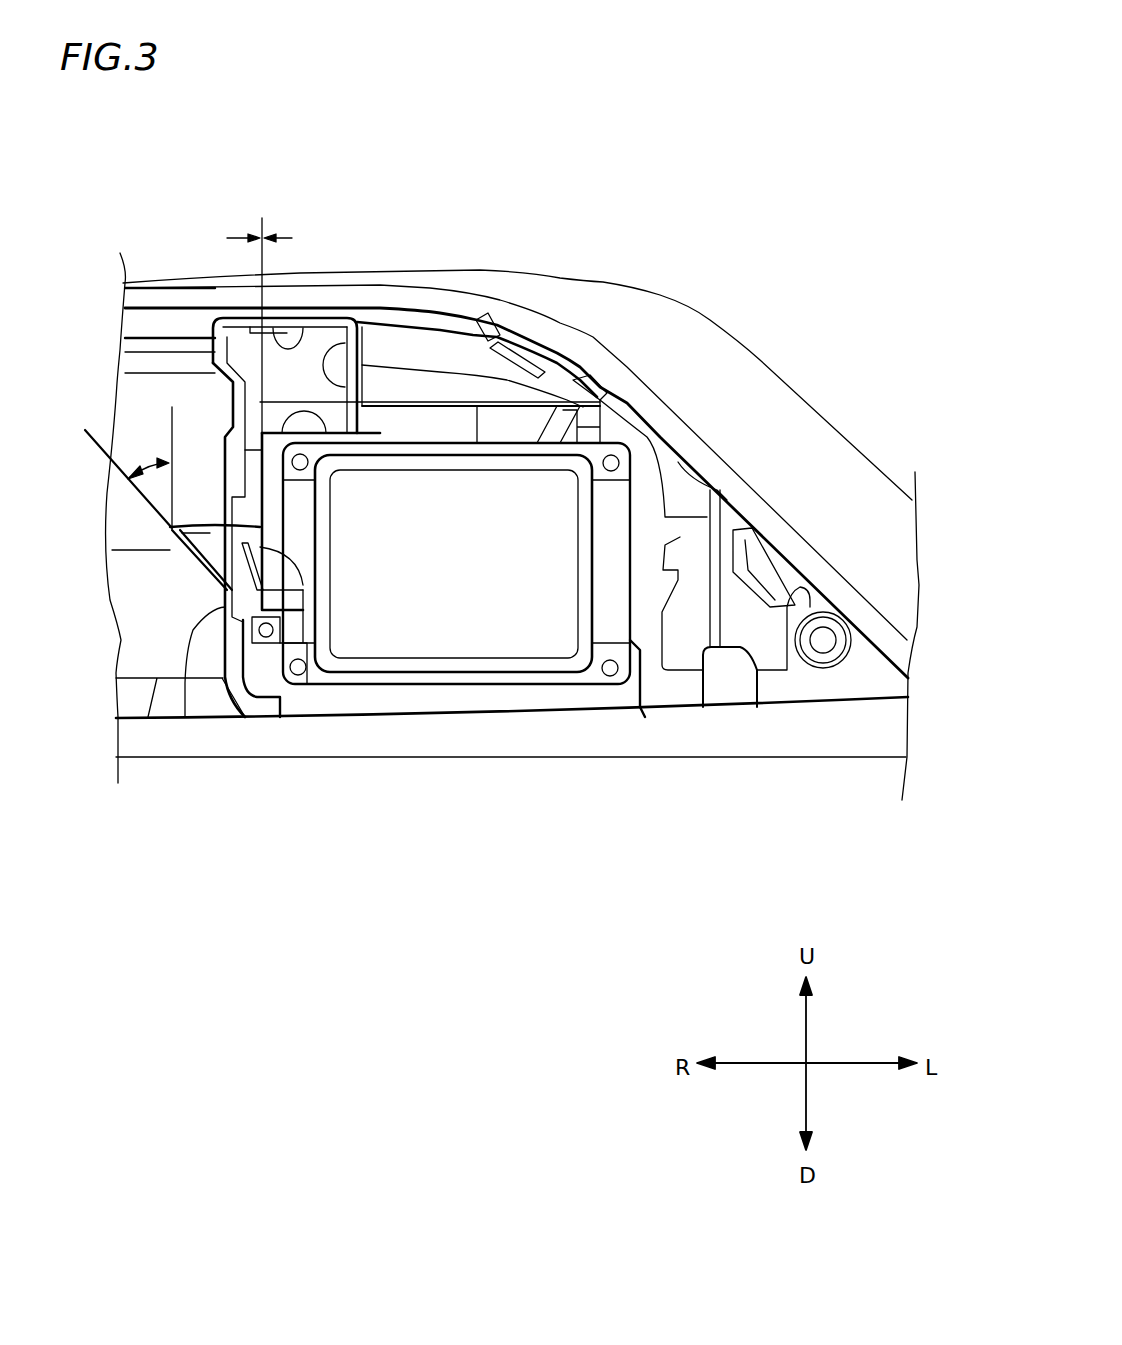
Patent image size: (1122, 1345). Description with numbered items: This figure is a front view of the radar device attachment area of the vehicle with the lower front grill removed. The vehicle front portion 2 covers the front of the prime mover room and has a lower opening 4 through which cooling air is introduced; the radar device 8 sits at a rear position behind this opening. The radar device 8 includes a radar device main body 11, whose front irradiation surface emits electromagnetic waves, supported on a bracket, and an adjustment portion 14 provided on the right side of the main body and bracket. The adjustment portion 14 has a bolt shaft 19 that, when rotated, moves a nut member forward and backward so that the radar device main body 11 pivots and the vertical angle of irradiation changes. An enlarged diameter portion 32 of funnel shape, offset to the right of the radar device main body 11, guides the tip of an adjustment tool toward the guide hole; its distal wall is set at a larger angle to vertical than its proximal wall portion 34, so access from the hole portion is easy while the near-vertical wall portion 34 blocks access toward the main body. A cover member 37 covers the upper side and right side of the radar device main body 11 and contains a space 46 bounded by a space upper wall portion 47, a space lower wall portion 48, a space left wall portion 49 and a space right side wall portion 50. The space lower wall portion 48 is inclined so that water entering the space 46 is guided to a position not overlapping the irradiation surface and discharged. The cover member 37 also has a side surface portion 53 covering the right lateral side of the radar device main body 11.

The vehicle front portion 2 is at (745, 333).
The lower opening 4 is at (707, 487).
The radar device 8 is at (631, 670).
The radar device main body 11 is at (517, 643).
The adjustment portion 14 is at (203, 520).
The bolt shaft 19 is at (260, 650).
The enlarged diameter portion 32 is at (222, 530).
The wall portion 34 is at (292, 600).
The cover member 37 is at (482, 318).
The space 46 is at (350, 330).
The space upper wall portion 47 is at (302, 318).
The space lower wall portion 48 is at (333, 440).
The space left wall portion 49 is at (308, 365).
The space right side wall portion 50 is at (233, 318).
The side surface portion 53 is at (186, 717).